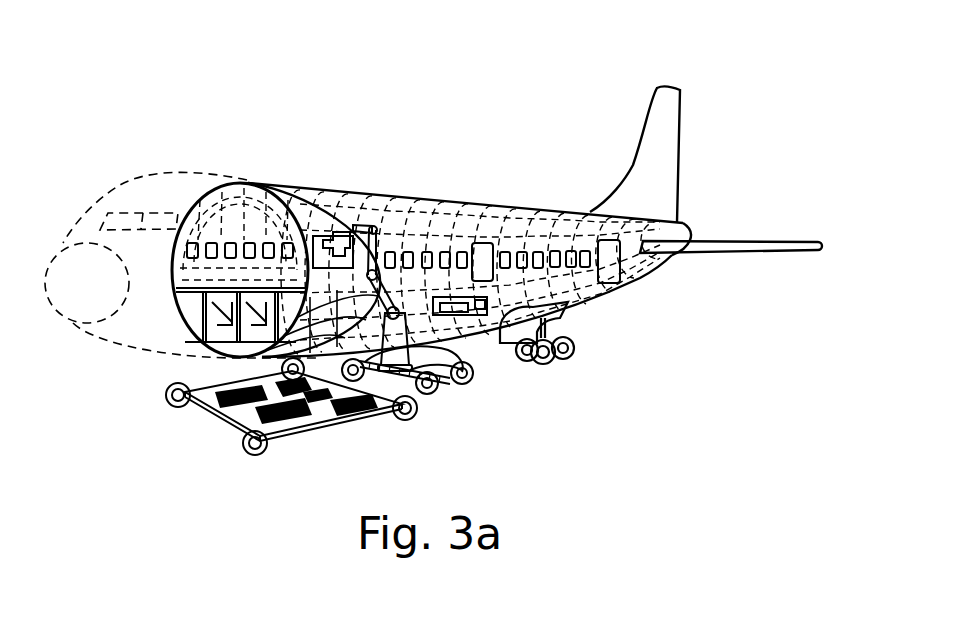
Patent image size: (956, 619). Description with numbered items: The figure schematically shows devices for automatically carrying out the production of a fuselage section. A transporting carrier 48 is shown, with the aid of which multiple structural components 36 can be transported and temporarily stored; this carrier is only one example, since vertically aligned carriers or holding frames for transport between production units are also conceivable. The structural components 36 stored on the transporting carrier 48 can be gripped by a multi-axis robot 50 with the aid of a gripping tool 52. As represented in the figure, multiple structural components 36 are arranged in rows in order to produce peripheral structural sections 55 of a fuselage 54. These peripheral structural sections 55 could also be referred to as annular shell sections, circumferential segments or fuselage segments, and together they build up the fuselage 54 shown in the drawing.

The structural component 36 is at (280, 222).
The transporting carrier 48 is at (217, 420).
The multi-axis robot 50 is at (447, 348).
The gripping tool 52 is at (340, 222).
The fuselage 54 is at (433, 188).
The peripheral structural section 55 is at (567, 211).